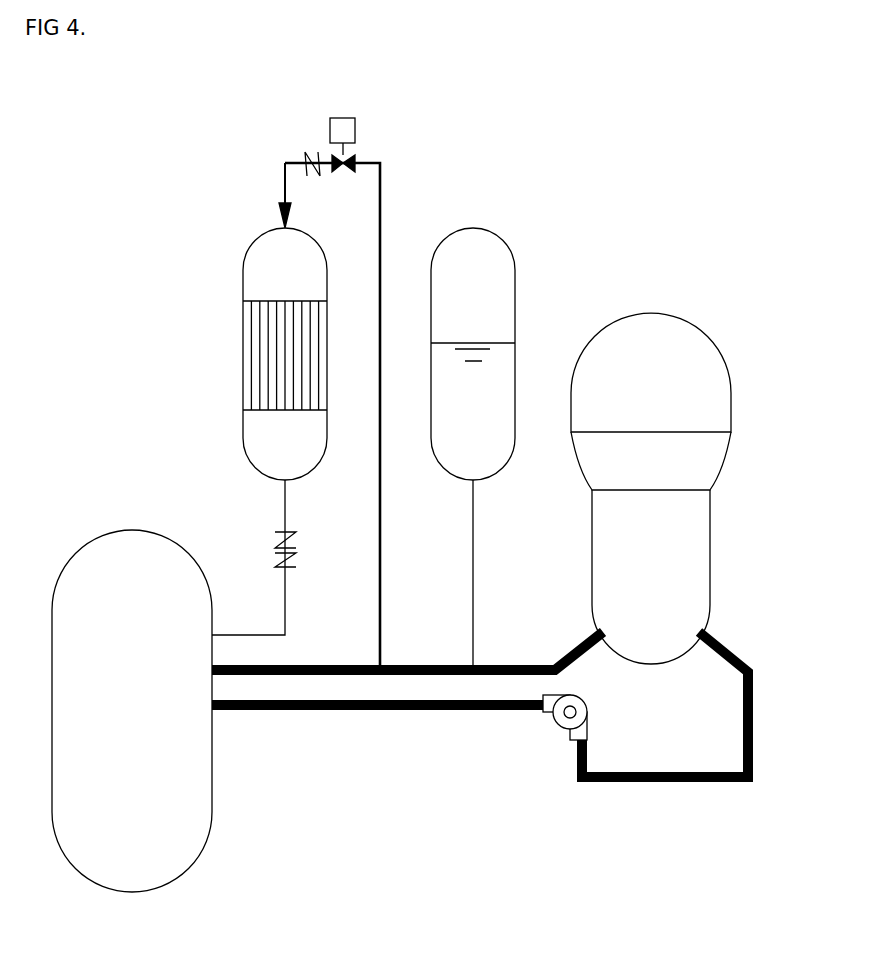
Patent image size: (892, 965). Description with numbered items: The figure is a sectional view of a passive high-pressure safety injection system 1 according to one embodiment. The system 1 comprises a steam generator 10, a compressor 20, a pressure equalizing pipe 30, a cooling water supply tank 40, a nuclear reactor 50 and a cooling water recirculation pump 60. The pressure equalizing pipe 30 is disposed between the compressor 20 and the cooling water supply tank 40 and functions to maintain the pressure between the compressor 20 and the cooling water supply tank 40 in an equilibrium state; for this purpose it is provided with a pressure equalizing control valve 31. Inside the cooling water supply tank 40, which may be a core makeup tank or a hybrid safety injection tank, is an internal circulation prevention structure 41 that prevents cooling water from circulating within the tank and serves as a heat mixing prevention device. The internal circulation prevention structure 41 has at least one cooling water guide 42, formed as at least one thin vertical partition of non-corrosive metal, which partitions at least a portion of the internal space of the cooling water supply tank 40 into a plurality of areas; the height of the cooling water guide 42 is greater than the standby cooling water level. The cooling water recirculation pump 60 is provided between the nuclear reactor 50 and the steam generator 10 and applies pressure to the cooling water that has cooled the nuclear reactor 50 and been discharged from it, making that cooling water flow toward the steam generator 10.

The passive high-pressure safety injection system 1 is at (659, 131).
The steam generator 10 is at (697, 555).
The compressor 20 is at (507, 372).
The pressure equalizing pipe 30 is at (382, 196).
The pressure equalizing control valve 31 is at (356, 130).
The cooling water supply tank 40 is at (252, 271).
The internal circulation prevention structure 41 is at (240, 301).
The cooling water guide 42 is at (312, 390).
The nuclear reactor 50 is at (130, 542).
The cooling water recirculation pump 60 is at (557, 717).